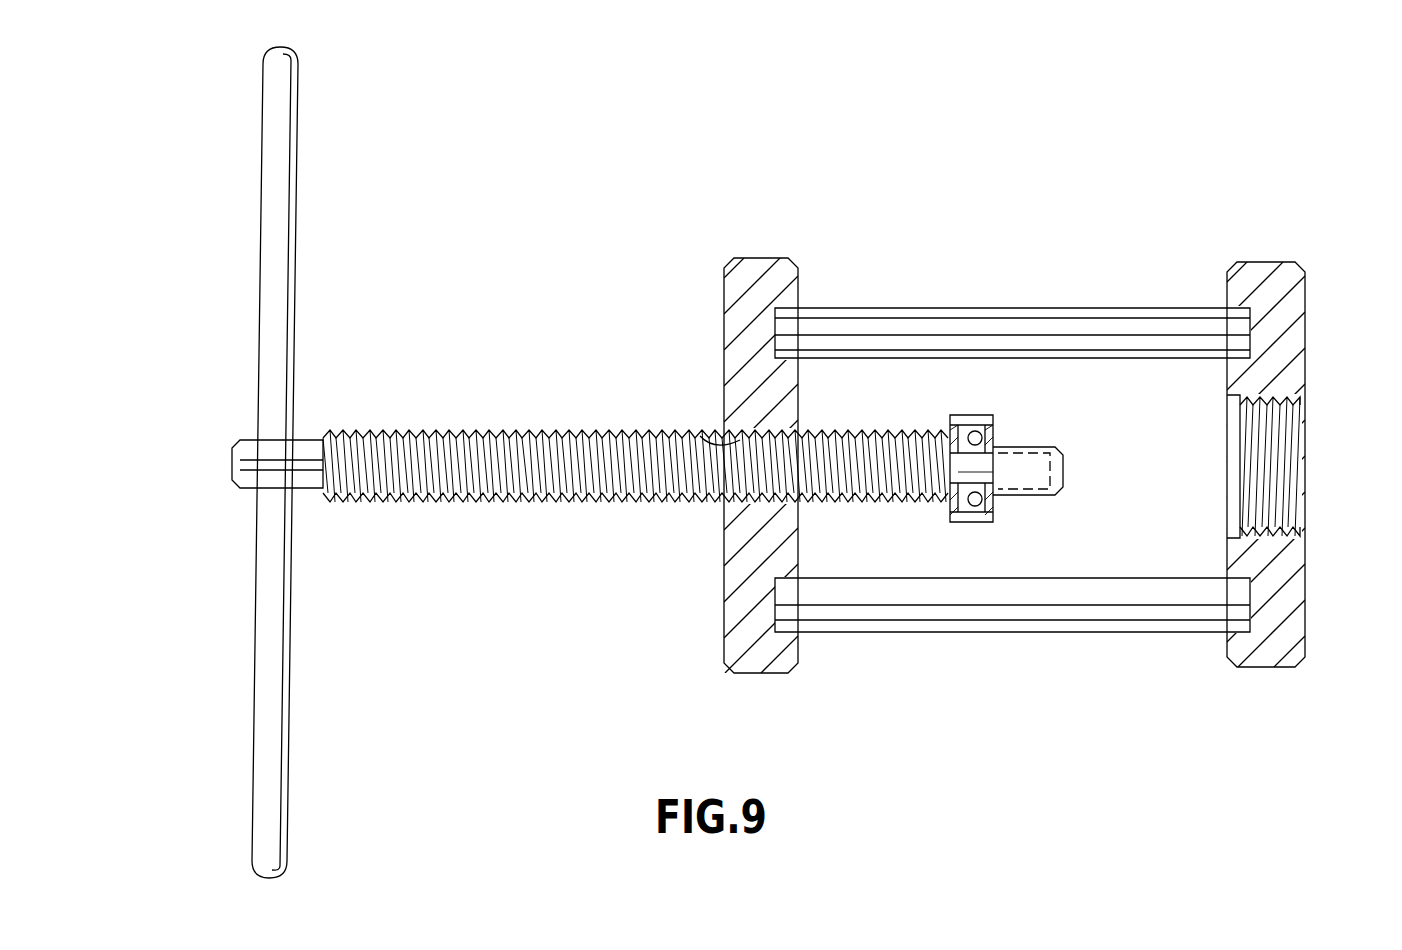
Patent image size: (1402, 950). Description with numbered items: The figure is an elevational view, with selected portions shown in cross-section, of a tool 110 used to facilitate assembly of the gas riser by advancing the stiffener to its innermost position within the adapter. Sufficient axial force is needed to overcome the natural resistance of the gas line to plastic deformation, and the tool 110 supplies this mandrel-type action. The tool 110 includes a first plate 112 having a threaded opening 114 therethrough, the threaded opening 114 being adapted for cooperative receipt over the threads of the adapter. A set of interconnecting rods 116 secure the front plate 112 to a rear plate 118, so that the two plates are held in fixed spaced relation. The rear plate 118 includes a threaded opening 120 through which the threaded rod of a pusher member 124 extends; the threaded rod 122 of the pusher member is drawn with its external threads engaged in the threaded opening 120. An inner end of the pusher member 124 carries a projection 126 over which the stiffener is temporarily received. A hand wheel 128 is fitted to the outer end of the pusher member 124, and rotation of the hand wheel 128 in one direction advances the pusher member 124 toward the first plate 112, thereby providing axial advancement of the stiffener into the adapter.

The tool 110 is at (1055, 268).
The first plate 112 is at (1305, 295).
The threaded opening 114 is at (1278, 408).
The interconnecting rods 116 is at (954, 308).
The rear plate 118 is at (727, 296).
The threaded opening 120 is at (703, 436).
The threaded shaft 122 is at (567, 480).
The pusher member 124 is at (545, 420).
The projection 126 is at (1028, 445).
The hand wheel 128 is at (260, 173).